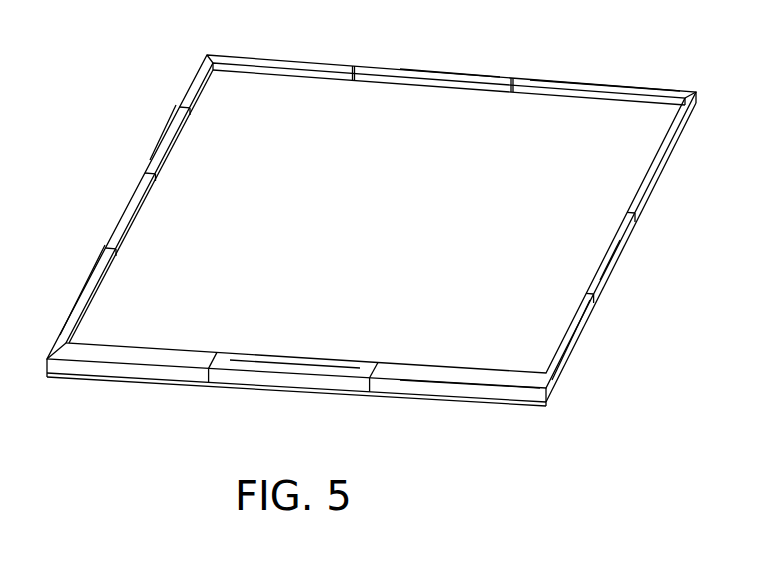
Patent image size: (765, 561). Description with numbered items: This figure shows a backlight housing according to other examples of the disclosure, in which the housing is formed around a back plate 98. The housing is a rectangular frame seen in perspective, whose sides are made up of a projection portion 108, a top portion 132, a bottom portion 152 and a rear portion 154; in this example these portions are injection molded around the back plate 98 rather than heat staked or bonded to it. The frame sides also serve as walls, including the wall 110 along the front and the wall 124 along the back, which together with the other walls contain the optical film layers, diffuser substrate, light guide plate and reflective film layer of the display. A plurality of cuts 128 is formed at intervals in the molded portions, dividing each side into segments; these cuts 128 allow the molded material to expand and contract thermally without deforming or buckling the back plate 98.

The back plate 98 is at (391, 220).
The projection portion 108 is at (178, 138).
The wall 110 is at (468, 366).
The wall 124 is at (580, 93).
The cuts 128 is at (361, 61).
The top portion 132 is at (92, 274).
The bottom portion 152 is at (580, 335).
The rear portion 154 is at (483, 77).